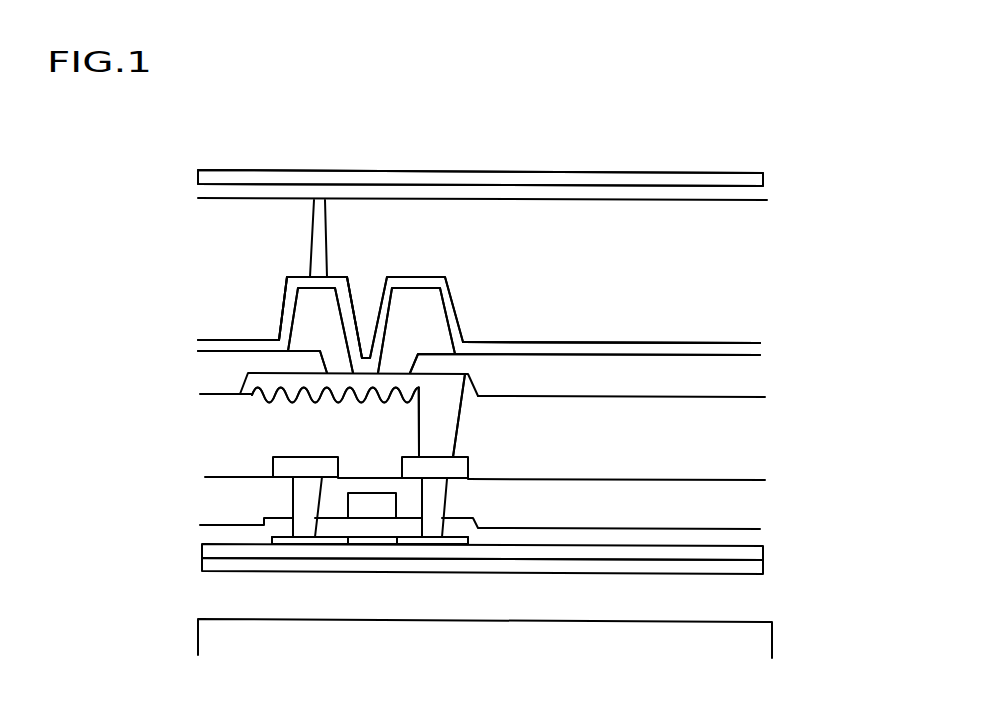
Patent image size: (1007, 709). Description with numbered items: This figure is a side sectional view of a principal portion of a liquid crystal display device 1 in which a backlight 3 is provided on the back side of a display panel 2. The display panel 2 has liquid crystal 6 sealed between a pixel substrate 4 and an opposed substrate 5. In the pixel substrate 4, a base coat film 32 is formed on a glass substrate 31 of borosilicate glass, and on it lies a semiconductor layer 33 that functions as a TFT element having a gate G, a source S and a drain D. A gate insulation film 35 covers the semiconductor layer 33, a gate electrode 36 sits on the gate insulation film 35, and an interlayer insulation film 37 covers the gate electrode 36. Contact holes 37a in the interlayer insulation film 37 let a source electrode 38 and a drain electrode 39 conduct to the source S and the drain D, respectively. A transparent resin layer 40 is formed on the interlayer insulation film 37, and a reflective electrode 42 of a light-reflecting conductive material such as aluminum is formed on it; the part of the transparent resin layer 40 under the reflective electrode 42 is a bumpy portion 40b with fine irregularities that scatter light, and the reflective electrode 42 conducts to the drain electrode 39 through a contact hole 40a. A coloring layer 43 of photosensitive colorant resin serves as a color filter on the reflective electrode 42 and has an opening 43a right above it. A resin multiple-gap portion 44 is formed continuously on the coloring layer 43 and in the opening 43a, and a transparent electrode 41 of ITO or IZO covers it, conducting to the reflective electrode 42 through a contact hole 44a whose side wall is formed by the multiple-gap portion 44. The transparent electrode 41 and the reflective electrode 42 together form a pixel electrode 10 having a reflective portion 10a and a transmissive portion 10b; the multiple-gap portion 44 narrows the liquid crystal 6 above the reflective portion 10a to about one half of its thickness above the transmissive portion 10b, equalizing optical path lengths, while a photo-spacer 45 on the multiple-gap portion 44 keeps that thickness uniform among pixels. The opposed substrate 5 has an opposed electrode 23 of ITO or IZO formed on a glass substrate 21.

The liquid crystal display device 1 is at (823, 252).
The display panel 2 is at (482, 146).
The backlight 3 is at (763, 636).
The pixel substrate 4 is at (793, 343).
The opposed substrate 5 is at (775, 172).
The liquid crystal 6 is at (737, 282).
The pixel electrode 10 is at (479, 303).
The reflective portion 10a is at (472, 387).
The transmissive portion 10b is at (615, 340).
The glass substrate 21 is at (677, 178).
The opposed electrode 23 is at (623, 197).
The glass substrate 31 is at (640, 565).
The base coat film 32 is at (722, 550).
The semiconductor layer 33 is at (370, 578).
The gate insulation film 35 is at (410, 528).
The gate electrode 36 is at (357, 503).
The interlayer insulation film 37 is at (485, 520).
The contact holes 37a is at (433, 528).
The source electrode 38 is at (288, 460).
The drain electrode 39 is at (470, 467).
The transparent resin layer 40 is at (447, 415).
The contact hole 40a is at (428, 440).
The bumpy portion 40b is at (338, 403).
The transparent electrode 41 is at (571, 345).
The reflective electrode 42 is at (471, 386).
The coloring layer 43 is at (663, 370).
The opening 43a is at (407, 363).
The multiple-gap portion 44 is at (307, 302).
The contact hole 44a is at (342, 333).
The photo-spacer 45 is at (310, 233).
The source S is at (298, 539).
The gate G is at (368, 540).
The drain D is at (407, 540).